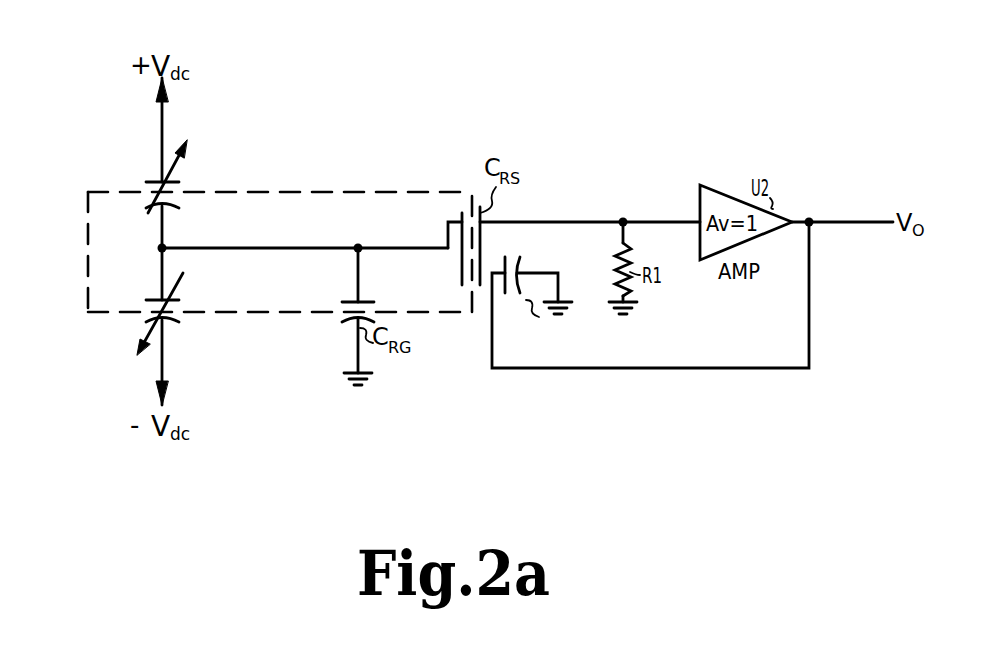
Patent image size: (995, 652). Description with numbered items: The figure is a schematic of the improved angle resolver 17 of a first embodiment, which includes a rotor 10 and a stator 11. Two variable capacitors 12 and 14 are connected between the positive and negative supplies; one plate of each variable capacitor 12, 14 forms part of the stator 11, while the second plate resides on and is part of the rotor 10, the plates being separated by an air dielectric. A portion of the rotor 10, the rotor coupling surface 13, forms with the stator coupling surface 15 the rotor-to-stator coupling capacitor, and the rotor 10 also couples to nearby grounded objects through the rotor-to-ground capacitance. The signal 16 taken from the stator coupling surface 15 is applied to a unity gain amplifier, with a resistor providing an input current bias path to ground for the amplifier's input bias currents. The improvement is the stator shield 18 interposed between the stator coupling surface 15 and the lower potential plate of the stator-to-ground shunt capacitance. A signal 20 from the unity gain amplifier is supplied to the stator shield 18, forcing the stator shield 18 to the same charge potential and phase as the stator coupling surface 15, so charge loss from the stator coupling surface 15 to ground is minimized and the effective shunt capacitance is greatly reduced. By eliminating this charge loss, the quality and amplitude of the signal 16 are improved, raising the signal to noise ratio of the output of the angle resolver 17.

The rotor 10 is at (375, 191).
The stator 11 is at (603, 393).
The variable capacitor 12 is at (158, 180).
The rotor coupling surface 13 is at (462, 213).
The variable capacitor 14 is at (168, 320).
The stator coupling surface 15 is at (481, 238).
The signal 16 is at (582, 221).
The improved angle resolver 17 is at (586, 122).
The stator shield 18 is at (492, 292).
The signal 20 is at (706, 369).